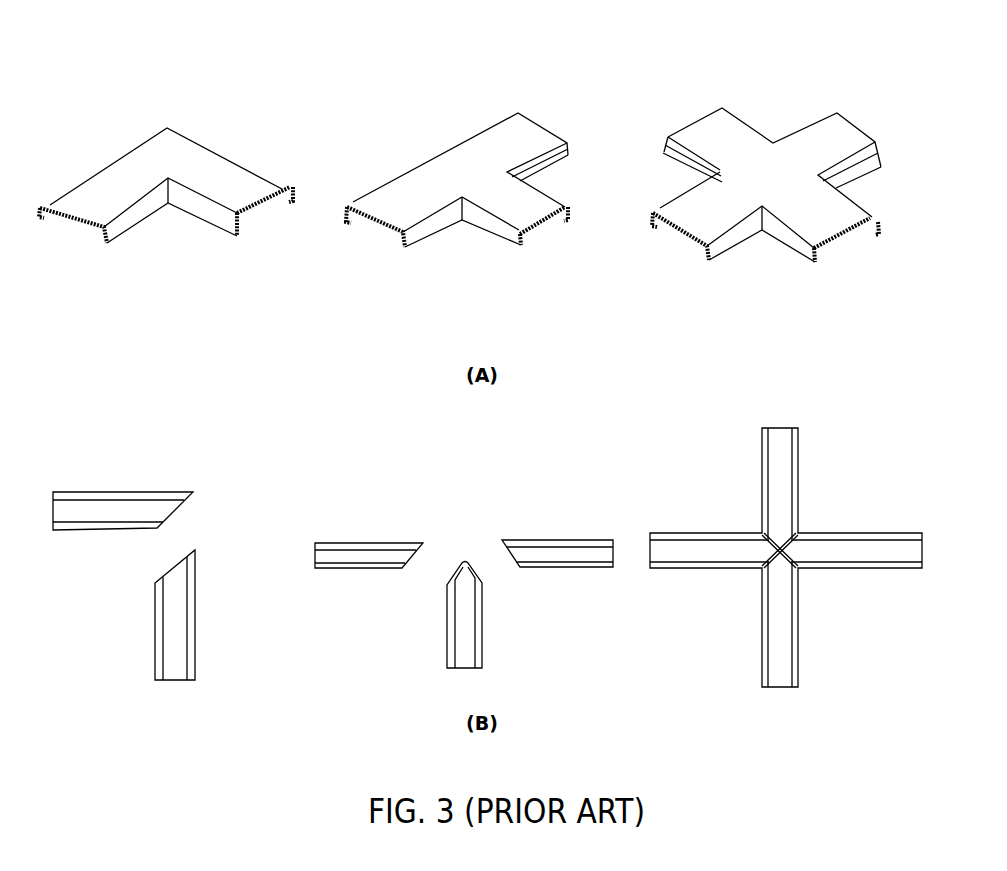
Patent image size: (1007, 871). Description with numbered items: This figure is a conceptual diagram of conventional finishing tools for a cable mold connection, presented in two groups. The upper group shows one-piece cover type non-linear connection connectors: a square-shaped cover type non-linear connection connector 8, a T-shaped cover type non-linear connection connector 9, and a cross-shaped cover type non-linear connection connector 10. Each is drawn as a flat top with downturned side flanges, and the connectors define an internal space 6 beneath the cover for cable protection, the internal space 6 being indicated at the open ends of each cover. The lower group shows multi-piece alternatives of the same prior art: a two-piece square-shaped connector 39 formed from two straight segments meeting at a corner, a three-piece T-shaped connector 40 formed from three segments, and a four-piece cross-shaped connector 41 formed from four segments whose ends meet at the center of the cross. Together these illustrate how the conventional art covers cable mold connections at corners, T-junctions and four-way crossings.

The internal space 6 is at (70, 223).
The square-shaped cover type non-linear connection connector 8 is at (146, 159).
The T-shaped cover type non-linear connection connector 9 is at (457, 142).
The cross-shaped cover type non-linear connection connector 10 is at (763, 167).
The two-piece square-shaped connector 39 is at (118, 490).
The three-piece T-shaped connector 40 is at (365, 540).
The four-piece cross-shaped connector 41 is at (801, 462).